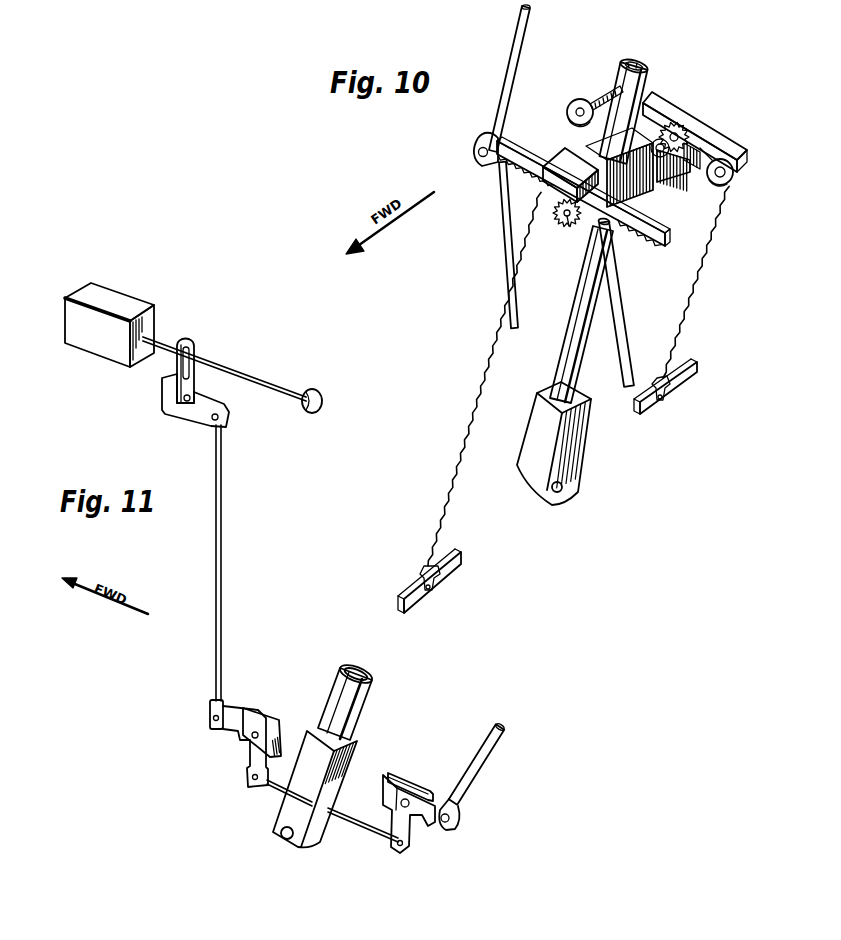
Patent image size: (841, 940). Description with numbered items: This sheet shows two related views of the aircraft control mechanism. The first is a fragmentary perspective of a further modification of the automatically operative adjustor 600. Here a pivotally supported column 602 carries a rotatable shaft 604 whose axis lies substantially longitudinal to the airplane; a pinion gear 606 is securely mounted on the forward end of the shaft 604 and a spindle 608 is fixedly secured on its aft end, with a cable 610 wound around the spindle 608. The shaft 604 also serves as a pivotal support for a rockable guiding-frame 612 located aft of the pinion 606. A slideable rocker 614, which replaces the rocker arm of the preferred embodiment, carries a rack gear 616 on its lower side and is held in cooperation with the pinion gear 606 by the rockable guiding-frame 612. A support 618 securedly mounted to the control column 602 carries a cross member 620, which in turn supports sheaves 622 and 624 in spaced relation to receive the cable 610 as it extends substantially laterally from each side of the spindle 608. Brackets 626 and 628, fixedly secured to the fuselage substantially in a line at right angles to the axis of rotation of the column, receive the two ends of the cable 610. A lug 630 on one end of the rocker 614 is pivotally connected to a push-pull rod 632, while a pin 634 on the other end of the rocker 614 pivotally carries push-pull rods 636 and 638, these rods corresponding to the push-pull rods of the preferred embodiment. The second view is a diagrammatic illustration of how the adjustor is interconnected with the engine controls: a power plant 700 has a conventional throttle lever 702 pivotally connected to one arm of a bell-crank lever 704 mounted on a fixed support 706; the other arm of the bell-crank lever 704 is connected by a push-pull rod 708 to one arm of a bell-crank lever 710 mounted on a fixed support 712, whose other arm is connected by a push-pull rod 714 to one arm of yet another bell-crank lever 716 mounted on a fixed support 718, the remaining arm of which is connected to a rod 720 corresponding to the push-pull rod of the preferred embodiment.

In FIG. 10, the adjustor 600 is at (547, 154).
In FIG. 10, the pivotally supported column 602 is at (637, 58).
In FIG. 10, the rotatable shaft 604 is at (661, 180).
In FIG. 10, the pinion gear 606 is at (569, 227).
In FIG. 10, the spindle 608 is at (688, 158).
In FIG. 10, the cable 610 is at (701, 147).
In FIG. 10, the rockable guiding-frame 612 is at (559, 150).
In FIG. 10, the slideable rocker 614 is at (517, 167).
In FIG. 10, the rack gear 616 is at (552, 199).
In FIG. 10, the support 618 is at (661, 193).
In FIG. 10, the cross member 620 is at (681, 116).
In FIG. 10, the sheave 622 is at (581, 99).
In FIG. 10, the sheave 624 is at (733, 186).
In FIG. 10, the bracket 626 is at (670, 392).
In FIG. 10, the bracket 628 is at (423, 571).
In FIG. 10, the lug 630 is at (620, 242).
In FIG. 10, the push-pull rod 632 is at (634, 341).
In FIG. 10, the pin 634 is at (479, 152).
In FIG. 10, the push-pull rod 636 is at (509, 241).
In FIG. 10, the push-pull rod 638 is at (516, 46).
In FIG. 11, the power plant 700 is at (80, 292).
In FIG. 11, the throttle lever 702 is at (283, 388).
In FIG. 11, the bell-crank lever 704 is at (175, 362).
In FIG. 11, the fixed support 706 is at (170, 416).
In FIG. 11, the push-pull rod 708 is at (225, 550).
In FIG. 11, the bell-crank lever 710 is at (228, 736).
In FIG. 11, the fixed support 712 is at (268, 712).
In FIG. 11, the push-pull rod 714 is at (345, 824).
In FIG. 11, the bell-crank lever 716 is at (420, 830).
In FIG. 11, the fixed support 718 is at (413, 783).
In FIG. 11, the rod 720 is at (487, 779).